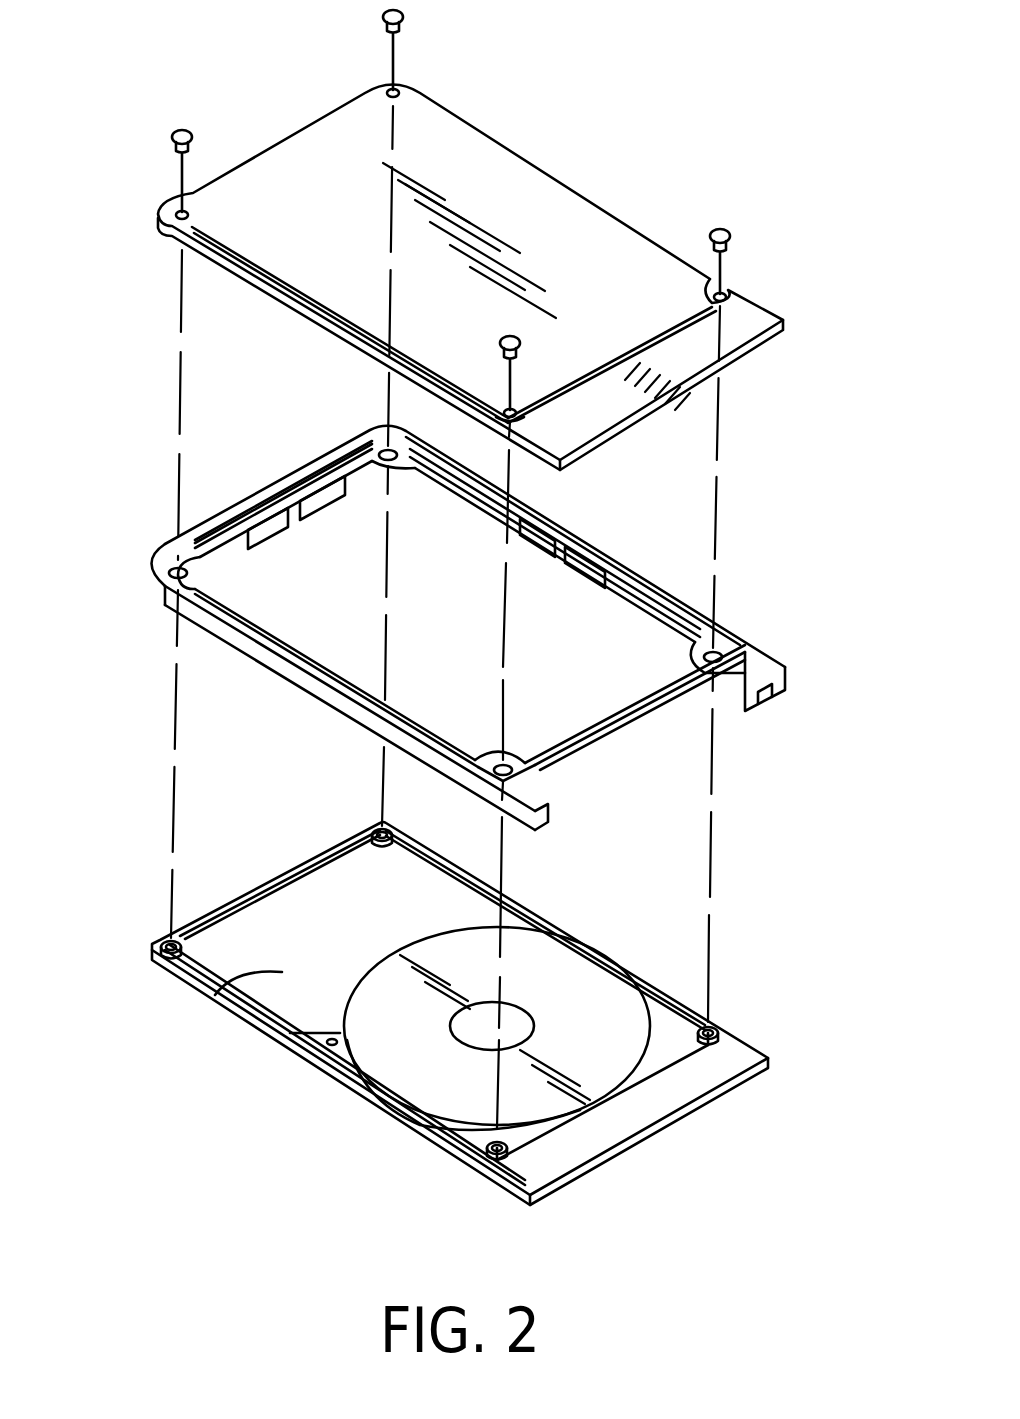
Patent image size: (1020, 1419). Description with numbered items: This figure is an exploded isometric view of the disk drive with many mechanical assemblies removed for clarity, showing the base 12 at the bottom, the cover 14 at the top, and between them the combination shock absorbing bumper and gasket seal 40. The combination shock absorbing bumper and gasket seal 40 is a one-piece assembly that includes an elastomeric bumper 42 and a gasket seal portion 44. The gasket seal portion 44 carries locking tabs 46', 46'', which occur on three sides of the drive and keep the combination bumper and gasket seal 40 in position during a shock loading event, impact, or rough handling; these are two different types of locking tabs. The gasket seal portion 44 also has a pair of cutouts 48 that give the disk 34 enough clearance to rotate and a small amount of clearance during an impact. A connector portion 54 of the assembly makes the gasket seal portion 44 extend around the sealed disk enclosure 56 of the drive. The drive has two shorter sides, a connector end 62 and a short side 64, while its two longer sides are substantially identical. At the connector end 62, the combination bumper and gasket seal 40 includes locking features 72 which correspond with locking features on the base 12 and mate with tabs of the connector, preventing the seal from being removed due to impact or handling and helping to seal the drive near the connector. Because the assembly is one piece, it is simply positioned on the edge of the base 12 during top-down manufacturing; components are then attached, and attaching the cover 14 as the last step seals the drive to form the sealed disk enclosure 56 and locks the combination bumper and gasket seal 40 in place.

The base 12 is at (460, 1013).
The cover 14 is at (527, 192).
The disk 34 is at (590, 990).
The combination shock absorbing bumper and gasket seal 40 is at (431, 628).
The elastomeric bumper 42 is at (222, 634).
The gasket seal portion 44 is at (288, 492).
The locking tab 46' is at (283, 553).
The locking tab 46'' is at (591, 499).
The cutouts 48 is at (607, 556).
The connector portion 54 is at (622, 738).
The sealed disk enclosure 56 is at (248, 988).
The connector end 62 is at (650, 1128).
The short side 64 is at (243, 898).
The locking features 72 is at (762, 700).